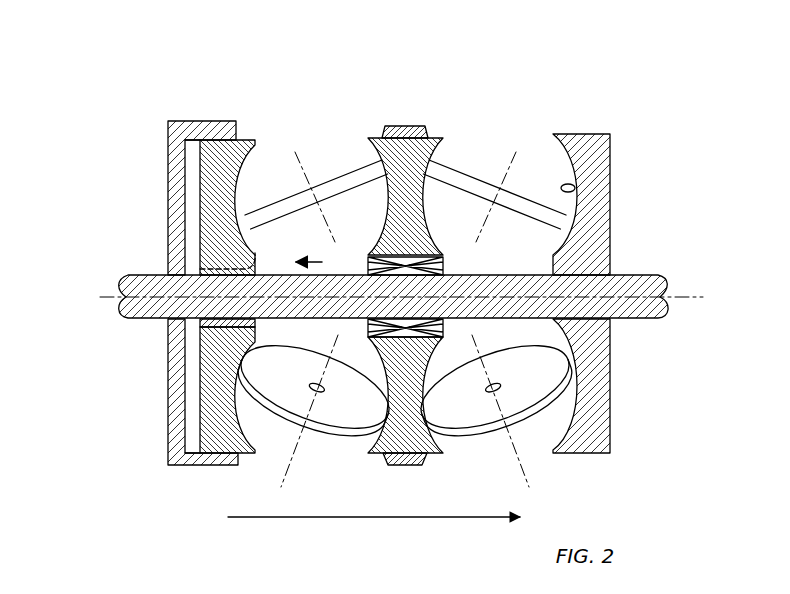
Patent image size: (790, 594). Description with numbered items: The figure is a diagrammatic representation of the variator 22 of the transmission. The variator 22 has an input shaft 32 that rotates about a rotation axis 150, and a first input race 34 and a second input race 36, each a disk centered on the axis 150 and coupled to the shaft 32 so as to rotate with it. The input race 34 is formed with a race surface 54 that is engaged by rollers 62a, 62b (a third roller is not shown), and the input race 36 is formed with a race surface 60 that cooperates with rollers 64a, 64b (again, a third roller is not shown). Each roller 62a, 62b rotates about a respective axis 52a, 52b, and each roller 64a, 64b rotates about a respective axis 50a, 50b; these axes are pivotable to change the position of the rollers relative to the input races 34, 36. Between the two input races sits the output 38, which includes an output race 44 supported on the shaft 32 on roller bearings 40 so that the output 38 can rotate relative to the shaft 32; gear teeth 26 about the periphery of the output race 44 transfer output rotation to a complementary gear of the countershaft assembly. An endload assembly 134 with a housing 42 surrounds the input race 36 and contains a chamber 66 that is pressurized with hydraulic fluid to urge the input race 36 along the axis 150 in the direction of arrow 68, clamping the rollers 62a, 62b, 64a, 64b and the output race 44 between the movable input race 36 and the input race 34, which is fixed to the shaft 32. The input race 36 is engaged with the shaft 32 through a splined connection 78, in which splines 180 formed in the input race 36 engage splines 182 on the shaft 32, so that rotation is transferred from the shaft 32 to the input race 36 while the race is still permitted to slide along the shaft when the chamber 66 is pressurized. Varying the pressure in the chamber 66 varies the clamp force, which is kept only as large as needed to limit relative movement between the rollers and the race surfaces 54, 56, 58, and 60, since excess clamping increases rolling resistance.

The variator 22 is at (521, 78).
The gear teeth 26 is at (400, 130).
The input shaft 32 is at (150, 310).
The first input race 34 is at (582, 148).
The second input race 36 is at (243, 143).
The output 38 is at (395, 82).
The roller bearings 40 is at (445, 265).
The housing 42 is at (175, 184).
The output race 44 is at (430, 143).
The axis 50a is at (298, 157).
The axis 50b is at (301, 423).
The axis 52a is at (516, 152).
The axis 52b is at (500, 423).
The race surface 54 is at (575, 188).
The race surface 56 is at (428, 222).
The race surface 58 is at (390, 197).
The race surface 60 is at (255, 246).
The roller 62a is at (522, 208).
The roller 62b is at (492, 422).
The roller 64a is at (344, 182).
The roller 64b is at (345, 428).
The chamber 66 is at (192, 415).
The arrow 68 is at (393, 518).
The splined connection 78 is at (322, 258).
The endload assembly 134 is at (233, 110).
The rotation axis 150 is at (690, 295).
The splines 180 is at (256, 252).
The splines 182 is at (257, 322).